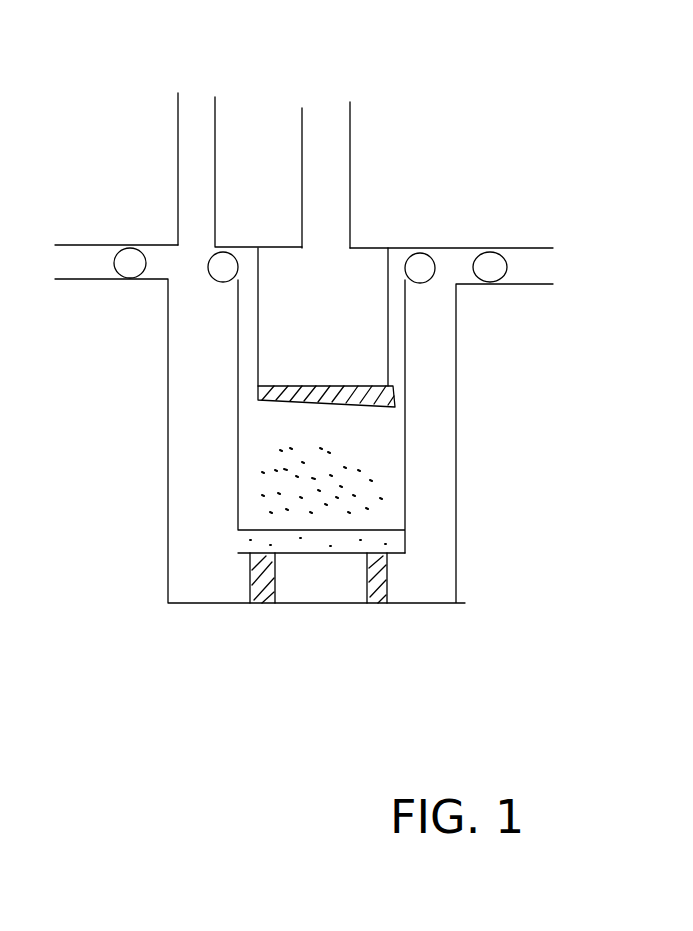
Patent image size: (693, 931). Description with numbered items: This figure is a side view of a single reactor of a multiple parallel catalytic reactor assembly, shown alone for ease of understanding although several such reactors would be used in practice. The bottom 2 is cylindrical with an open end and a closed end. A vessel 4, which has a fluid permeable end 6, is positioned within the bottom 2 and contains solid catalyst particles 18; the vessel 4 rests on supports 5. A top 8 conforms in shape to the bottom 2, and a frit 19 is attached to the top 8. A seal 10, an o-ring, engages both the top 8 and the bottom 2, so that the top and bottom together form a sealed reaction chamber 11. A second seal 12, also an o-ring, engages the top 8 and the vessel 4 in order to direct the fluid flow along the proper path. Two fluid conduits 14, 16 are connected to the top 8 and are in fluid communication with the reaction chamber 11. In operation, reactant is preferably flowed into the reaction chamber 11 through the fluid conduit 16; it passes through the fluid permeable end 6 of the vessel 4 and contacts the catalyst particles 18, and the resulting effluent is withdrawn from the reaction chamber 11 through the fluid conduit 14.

The bottom 2 is at (458, 463).
The vessel 4 is at (408, 407).
The supports 5 is at (385, 603).
The fluid permeable end 6 is at (390, 545).
The top 8 is at (392, 248).
The seal 10 is at (498, 253).
The reaction chamber 11 is at (66, 384).
The seal 12 is at (210, 252).
The fluid conduit 14 is at (350, 165).
The fluid conduit 16 is at (216, 125).
The solid catalyst particles 18 is at (350, 497).
The frit 19 is at (383, 390).